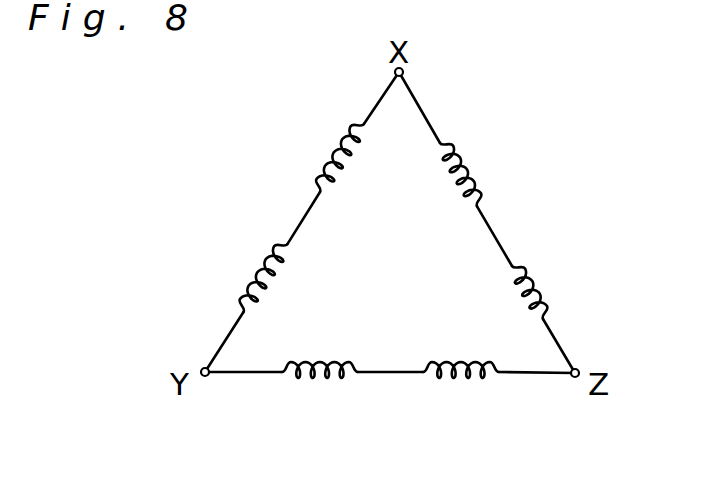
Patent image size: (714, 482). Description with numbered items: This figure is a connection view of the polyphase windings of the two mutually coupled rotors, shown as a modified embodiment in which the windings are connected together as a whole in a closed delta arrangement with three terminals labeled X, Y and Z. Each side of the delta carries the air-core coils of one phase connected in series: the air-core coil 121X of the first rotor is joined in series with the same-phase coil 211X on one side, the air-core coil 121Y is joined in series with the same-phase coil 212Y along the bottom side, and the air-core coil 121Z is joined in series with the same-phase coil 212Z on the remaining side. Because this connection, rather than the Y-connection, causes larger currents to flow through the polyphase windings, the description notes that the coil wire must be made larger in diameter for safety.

The X-phase coil 211X is at (337, 151).
The air-core coil 121X is at (257, 280).
The Z-phase coil 212Z is at (465, 172).
The air-core coil 121Z is at (528, 292).
The air-core coil 121Y is at (322, 361).
The Y-phase coil 212Y is at (460, 361).